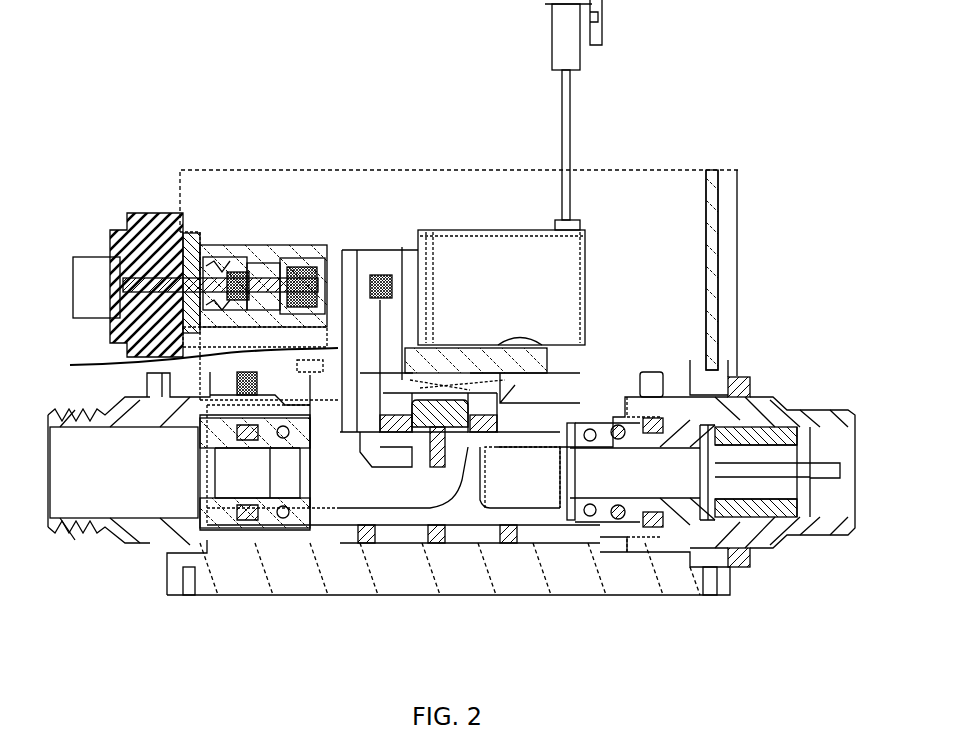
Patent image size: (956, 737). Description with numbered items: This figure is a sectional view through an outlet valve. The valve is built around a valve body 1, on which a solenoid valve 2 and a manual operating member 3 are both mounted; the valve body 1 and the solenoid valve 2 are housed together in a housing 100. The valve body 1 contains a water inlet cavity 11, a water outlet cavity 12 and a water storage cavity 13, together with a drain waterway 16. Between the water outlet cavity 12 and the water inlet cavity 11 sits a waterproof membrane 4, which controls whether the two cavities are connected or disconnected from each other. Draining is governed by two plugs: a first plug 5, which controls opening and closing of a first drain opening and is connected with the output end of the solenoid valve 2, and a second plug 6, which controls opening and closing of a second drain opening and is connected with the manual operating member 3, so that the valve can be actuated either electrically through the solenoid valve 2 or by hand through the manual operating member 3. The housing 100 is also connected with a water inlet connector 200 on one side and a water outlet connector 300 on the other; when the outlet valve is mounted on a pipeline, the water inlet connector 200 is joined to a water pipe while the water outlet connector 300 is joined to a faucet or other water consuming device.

The valve body 1 is at (444, 515).
The solenoid valve 2 is at (552, 298).
The manual operating member 3 is at (106, 262).
The waterproof membrane 4 is at (441, 408).
The first plug 5 is at (380, 275).
The second plug 6 is at (302, 267).
The water inlet cavity 11 is at (533, 487).
The water outlet cavity 12 is at (365, 487).
The water storage cavity 13 is at (478, 382).
The drain waterway 16 is at (189, 351).
The housing 100 is at (176, 168).
The water inlet connector 200 is at (802, 412).
The water outlet connector 300 is at (83, 532).